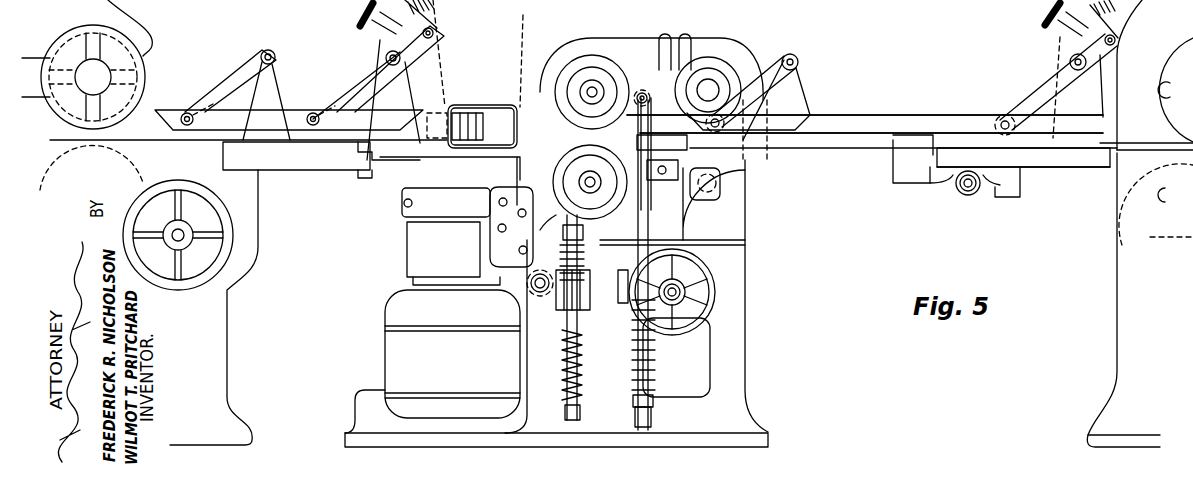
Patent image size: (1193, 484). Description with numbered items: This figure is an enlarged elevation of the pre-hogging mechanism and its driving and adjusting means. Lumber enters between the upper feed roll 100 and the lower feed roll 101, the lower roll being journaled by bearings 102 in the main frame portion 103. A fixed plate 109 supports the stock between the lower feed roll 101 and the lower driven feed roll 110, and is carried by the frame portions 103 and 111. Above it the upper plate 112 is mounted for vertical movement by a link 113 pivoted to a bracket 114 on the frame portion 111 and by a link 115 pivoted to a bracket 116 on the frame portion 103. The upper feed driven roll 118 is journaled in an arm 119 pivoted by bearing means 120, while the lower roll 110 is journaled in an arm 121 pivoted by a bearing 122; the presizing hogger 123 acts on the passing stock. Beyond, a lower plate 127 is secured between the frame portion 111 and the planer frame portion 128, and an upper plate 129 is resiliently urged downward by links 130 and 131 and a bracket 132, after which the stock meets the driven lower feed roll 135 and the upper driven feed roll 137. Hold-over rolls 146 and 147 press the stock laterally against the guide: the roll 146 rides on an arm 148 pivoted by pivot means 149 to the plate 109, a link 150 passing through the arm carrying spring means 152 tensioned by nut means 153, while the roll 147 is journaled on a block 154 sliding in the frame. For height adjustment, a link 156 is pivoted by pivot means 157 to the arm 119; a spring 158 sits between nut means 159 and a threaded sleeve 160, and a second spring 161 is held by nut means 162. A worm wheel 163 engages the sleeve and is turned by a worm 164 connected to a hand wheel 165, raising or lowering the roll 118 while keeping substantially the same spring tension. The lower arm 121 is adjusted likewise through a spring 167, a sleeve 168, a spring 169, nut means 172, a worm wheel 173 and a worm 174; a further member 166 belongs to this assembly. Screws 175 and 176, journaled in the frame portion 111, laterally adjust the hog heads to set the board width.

The upper feed roll 100 is at (1157, 63).
The lower feed roll 101 is at (1160, 267).
The bearings 102 is at (1130, 230).
The main frame portion 103 is at (1127, 372).
The fixed plate 109 is at (850, 158).
The lower driven feed roll 110 is at (570, 160).
The main frame portion 111 is at (738, 417).
The upper plate 112 is at (863, 125).
The link 113 is at (776, 62).
The bracket 114 is at (800, 110).
The link 115 is at (1023, 108).
The bracket 116 is at (1060, 52).
The upper feed driven roll 118 is at (580, 62).
The arm 119 is at (622, 48).
The bearing means 120 is at (710, 88).
The arm 121 is at (543, 180).
The bearing 122 is at (715, 188).
The presizing hogger 123 is at (463, 123).
The lower plate 127 is at (305, 162).
The frame portion of the planer mechanism 128 is at (217, 352).
The upper plate 129 is at (296, 112).
The link 130 is at (229, 54).
The link 131 is at (357, 83).
The bracket 132 is at (291, 45).
The driven lower feed roll 135 is at (138, 170).
The upper resiliently mounted driven feed roll 137 is at (142, 77).
The hold-over roll 146 is at (895, 160).
The hold-over roll 147 is at (680, 122).
The arm 148 is at (930, 185).
The pivot means 149 is at (1017, 200).
The link 150 is at (960, 195).
The spring means 152 is at (978, 192).
The nut means 153 is at (981, 196).
The block 154 is at (690, 193).
The link 156 is at (641, 120).
The pivot means 157 is at (668, 82).
The spring 158 is at (580, 275).
The nut means 159 is at (685, 222).
The sleeve 160 is at (705, 322).
The spring means 161 is at (650, 397).
The nut means 162 is at (650, 423).
The worm wheel 163 is at (603, 315).
The worm 164 is at (712, 275).
The hand wheel 165 is at (715, 307).
The stop bar 166 is at (553, 207).
The spring 167 is at (582, 369).
The sleeve 168 is at (560, 325).
The spring 169 is at (584, 260).
The nut means 172 is at (578, 233).
The worm wheel 173 is at (552, 300).
The worm 174 is at (527, 279).
The screw 175 is at (499, 203).
The screw 176 is at (495, 222).